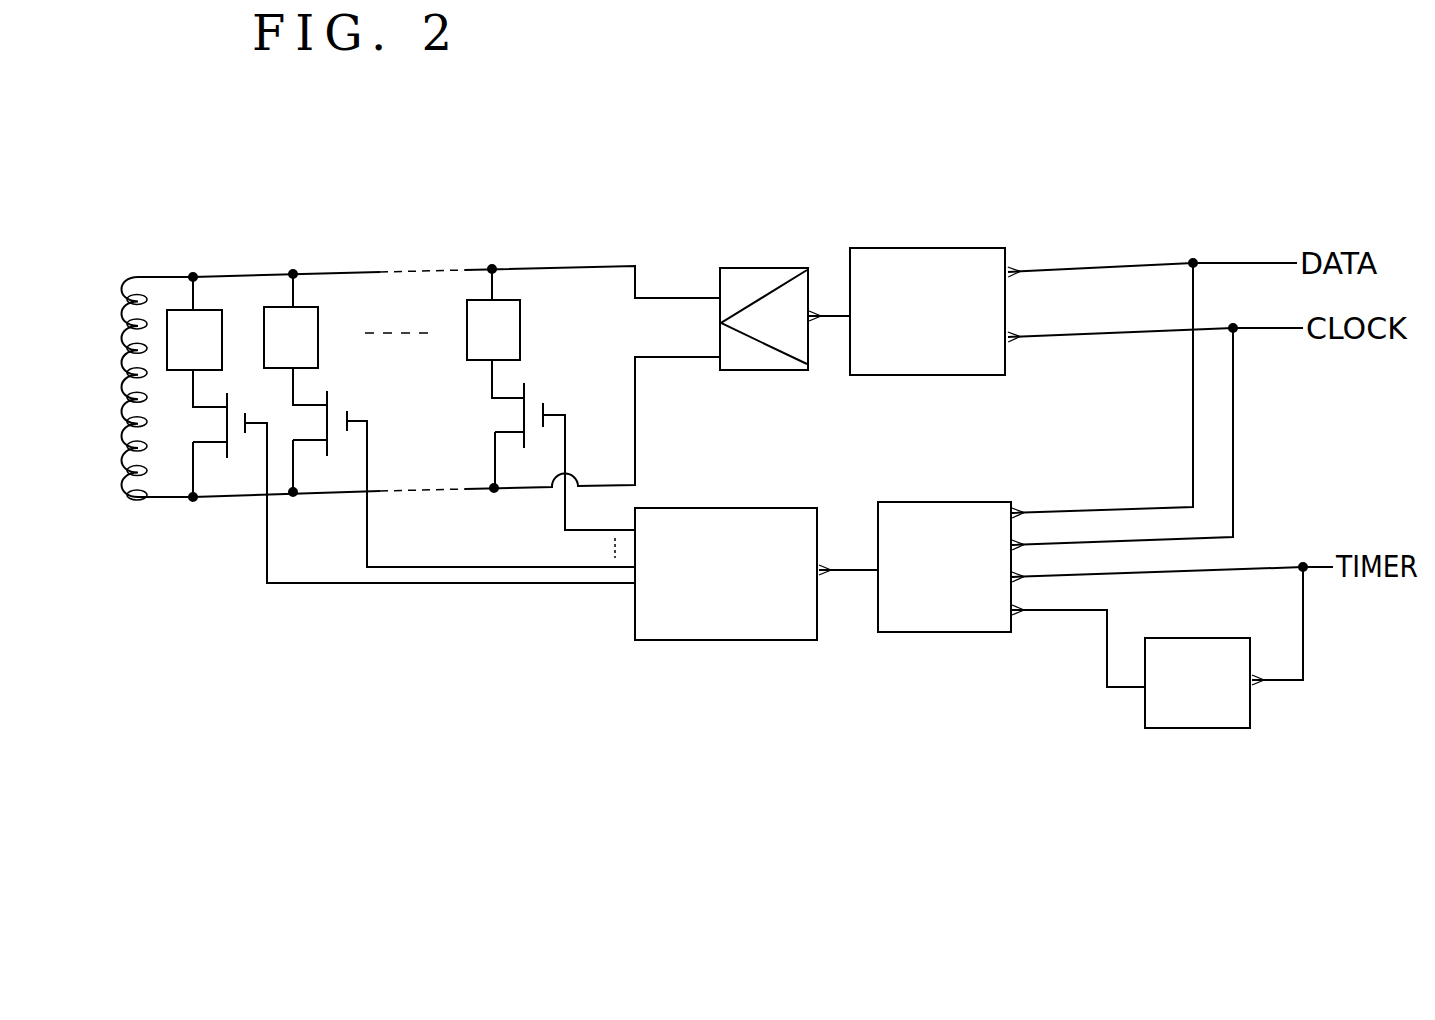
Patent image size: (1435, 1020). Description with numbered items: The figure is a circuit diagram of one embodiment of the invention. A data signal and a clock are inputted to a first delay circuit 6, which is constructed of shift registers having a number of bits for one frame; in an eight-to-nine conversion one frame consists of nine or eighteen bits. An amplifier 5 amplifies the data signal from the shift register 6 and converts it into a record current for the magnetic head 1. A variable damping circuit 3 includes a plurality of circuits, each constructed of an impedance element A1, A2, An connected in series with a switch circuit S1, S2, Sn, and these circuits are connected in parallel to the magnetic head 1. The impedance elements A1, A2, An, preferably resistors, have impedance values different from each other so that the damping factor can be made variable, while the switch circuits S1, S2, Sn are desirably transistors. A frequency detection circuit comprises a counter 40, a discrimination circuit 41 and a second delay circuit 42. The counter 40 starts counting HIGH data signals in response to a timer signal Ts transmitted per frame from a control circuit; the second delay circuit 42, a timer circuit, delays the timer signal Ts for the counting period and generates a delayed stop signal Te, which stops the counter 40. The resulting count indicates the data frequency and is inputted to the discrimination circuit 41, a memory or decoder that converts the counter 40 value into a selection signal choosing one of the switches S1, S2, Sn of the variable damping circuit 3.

The magnetic head 1 is at (132, 268).
The variable damping circuit 3 is at (450, 242).
The amplifier 5 is at (753, 267).
The first delay circuit 6 is at (950, 248).
The counter 40 is at (953, 632).
The discrimination circuit 41 is at (758, 640).
The second delay circuit 42 is at (1202, 728).
The impedance element A1 is at (224, 330).
The impedance element A2 is at (323, 328).
The impedance element An is at (520, 319).
The switch circuit S1 is at (414, 476).
The switch circuit S2 is at (464, 467).
The switch circuit Sn is at (563, 445).
The timer signal Ts is at (1157, 563).
The stop signal Te is at (1078, 635).